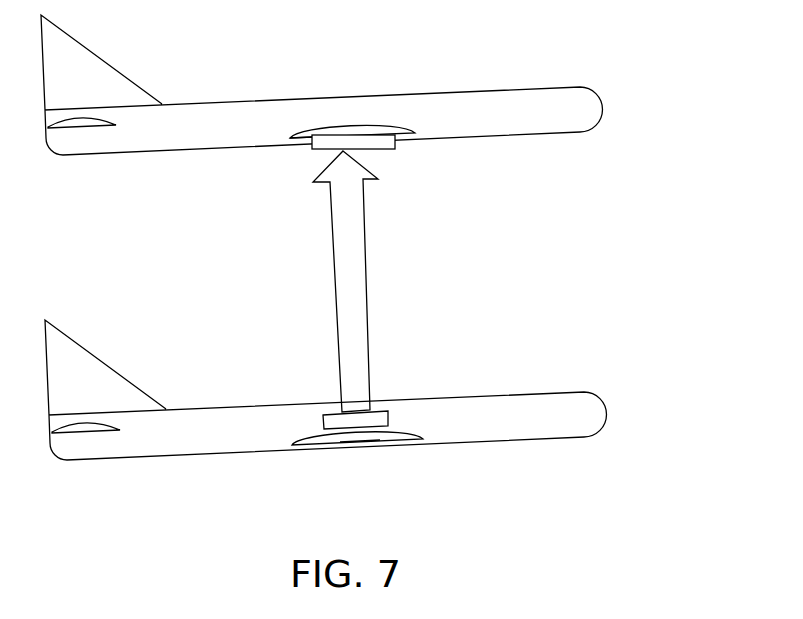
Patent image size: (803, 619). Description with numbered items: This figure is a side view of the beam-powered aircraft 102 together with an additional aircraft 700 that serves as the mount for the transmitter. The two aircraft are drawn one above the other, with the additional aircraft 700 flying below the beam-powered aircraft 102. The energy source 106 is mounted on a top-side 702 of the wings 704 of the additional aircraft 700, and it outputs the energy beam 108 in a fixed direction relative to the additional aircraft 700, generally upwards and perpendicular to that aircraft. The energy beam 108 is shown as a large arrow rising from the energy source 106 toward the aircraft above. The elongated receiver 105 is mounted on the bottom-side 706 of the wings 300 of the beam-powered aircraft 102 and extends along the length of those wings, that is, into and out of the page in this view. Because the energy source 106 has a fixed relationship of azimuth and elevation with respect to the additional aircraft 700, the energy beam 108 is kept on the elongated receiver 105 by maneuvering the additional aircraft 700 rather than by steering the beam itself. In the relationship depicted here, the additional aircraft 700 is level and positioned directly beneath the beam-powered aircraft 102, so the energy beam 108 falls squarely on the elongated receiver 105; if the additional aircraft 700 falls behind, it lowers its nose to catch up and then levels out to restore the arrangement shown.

The beam-powered aircraft 102 is at (603, 107).
The additional aircraft 700 is at (608, 413).
The wings 300 is at (383, 128).
The elongated receiver 105 is at (397, 145).
The energy source 106 is at (389, 412).
The energy beam 108 is at (366, 275).
The top-side 702 is at (307, 438).
The wings 704 is at (358, 437).
The bottom-side 706 is at (300, 145).